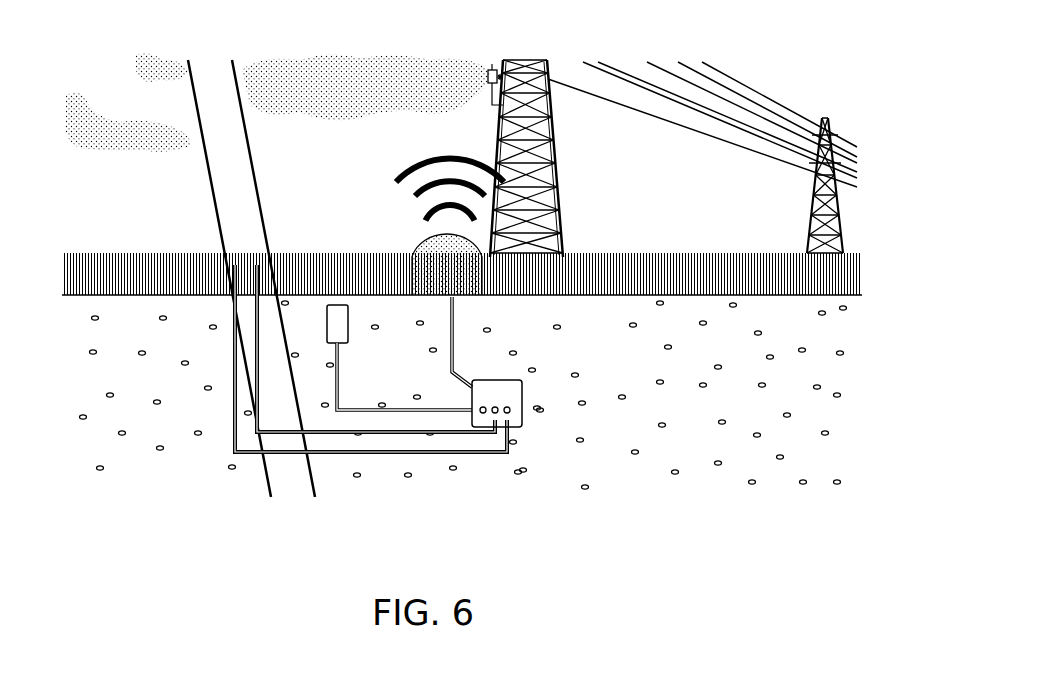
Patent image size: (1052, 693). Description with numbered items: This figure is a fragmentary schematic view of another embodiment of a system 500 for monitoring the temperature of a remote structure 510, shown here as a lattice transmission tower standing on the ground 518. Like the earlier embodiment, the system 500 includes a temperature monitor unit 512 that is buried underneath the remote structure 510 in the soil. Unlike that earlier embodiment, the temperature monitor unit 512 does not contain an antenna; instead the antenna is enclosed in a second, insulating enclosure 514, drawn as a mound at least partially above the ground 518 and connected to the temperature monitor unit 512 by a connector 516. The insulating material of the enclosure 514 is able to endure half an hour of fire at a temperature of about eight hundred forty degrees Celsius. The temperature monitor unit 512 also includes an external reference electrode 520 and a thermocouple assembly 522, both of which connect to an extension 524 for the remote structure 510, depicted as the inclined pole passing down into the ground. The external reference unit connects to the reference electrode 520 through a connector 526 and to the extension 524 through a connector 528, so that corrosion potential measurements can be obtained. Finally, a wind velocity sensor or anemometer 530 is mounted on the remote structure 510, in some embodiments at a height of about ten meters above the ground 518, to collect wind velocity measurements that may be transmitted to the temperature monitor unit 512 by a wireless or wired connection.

The system 500 is at (438, 21).
The remote structure 510 is at (505, 126).
The temperature monitor unit 512 is at (592, 387).
The insulating enclosure 514 is at (412, 237).
The connector 516 is at (453, 323).
The ground 518 is at (642, 250).
The external reference electrode 520 is at (338, 314).
The thermocouple assembly 522 is at (232, 360).
The extension 524 is at (253, 175).
The connector 526 is at (365, 408).
The connector 528 is at (427, 433).
The anemometer 530 is at (490, 88).